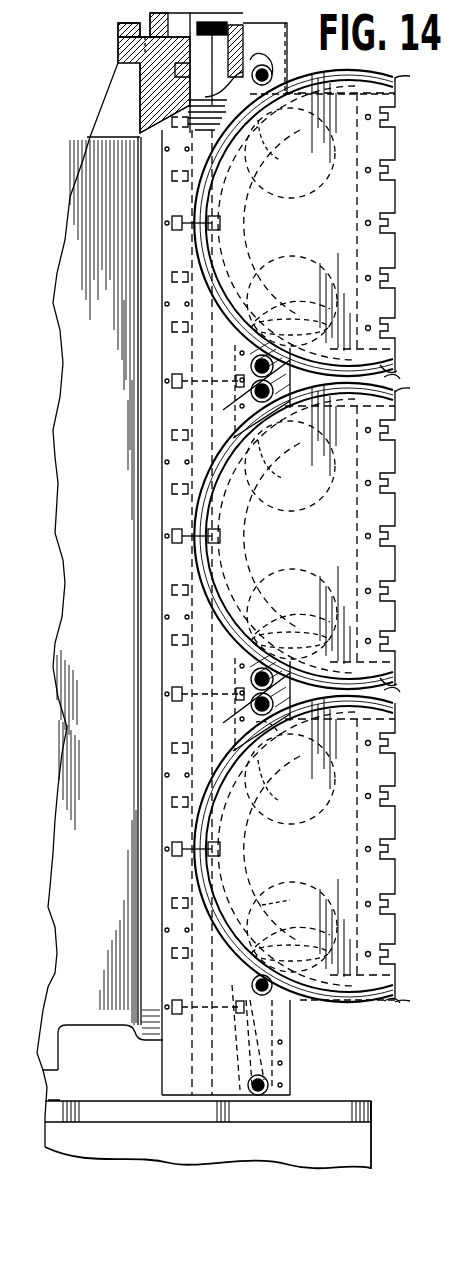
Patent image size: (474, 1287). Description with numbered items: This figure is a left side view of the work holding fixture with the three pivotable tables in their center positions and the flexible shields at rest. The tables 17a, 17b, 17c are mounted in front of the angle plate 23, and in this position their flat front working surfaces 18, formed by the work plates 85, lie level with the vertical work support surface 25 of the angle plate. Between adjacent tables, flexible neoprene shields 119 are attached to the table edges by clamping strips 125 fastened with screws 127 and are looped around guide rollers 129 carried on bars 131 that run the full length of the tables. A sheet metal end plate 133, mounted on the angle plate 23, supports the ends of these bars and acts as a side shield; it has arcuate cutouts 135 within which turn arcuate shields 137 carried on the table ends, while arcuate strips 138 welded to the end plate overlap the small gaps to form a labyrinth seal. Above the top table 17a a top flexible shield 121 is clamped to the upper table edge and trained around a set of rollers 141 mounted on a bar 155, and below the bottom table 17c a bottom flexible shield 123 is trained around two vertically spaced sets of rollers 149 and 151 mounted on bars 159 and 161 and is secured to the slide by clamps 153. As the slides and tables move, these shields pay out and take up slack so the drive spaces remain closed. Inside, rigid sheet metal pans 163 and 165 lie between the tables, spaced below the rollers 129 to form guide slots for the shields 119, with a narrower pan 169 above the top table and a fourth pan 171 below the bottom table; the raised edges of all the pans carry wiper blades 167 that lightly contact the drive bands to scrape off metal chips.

The front working surface 18 is at (396, 150).
The angle plate 23 is at (80, 195).
The work support surface 25 is at (200, 78).
The work plate 85 is at (386, 263).
The flexible shield 119 is at (333, 525).
The top flexible shield 121 is at (360, 74).
The bottom flexible shield 123 is at (322, 1004).
The clamping strip 125 is at (398, 84).
The screw 127 is at (397, 103).
The guide roller 129 is at (290, 640).
The bar 131 is at (270, 396).
The end plate 133 is at (286, 735).
The arcuate cutout 135 is at (242, 255).
The arcuate shield 137 is at (427, 998).
The arcuate strip 138 is at (262, 300).
The top rollers 141 is at (290, 80).
The bottom rollers 149 is at (290, 1026).
The bottom rollers 151 is at (275, 1097).
The clamp 153 is at (242, 1068).
The bar 155 is at (264, 82).
The bar 159 is at (300, 960).
The bar 161 is at (258, 1097).
The pan 163 is at (287, 464).
The pan 165 is at (283, 788).
The wiper blade 167 is at (280, 270).
The pan 169 is at (286, 147).
The pan 171 is at (294, 902).
The top work table 17a is at (322, 222).
The middle work table 17b is at (324, 532).
The bottom work table 17c is at (331, 842).